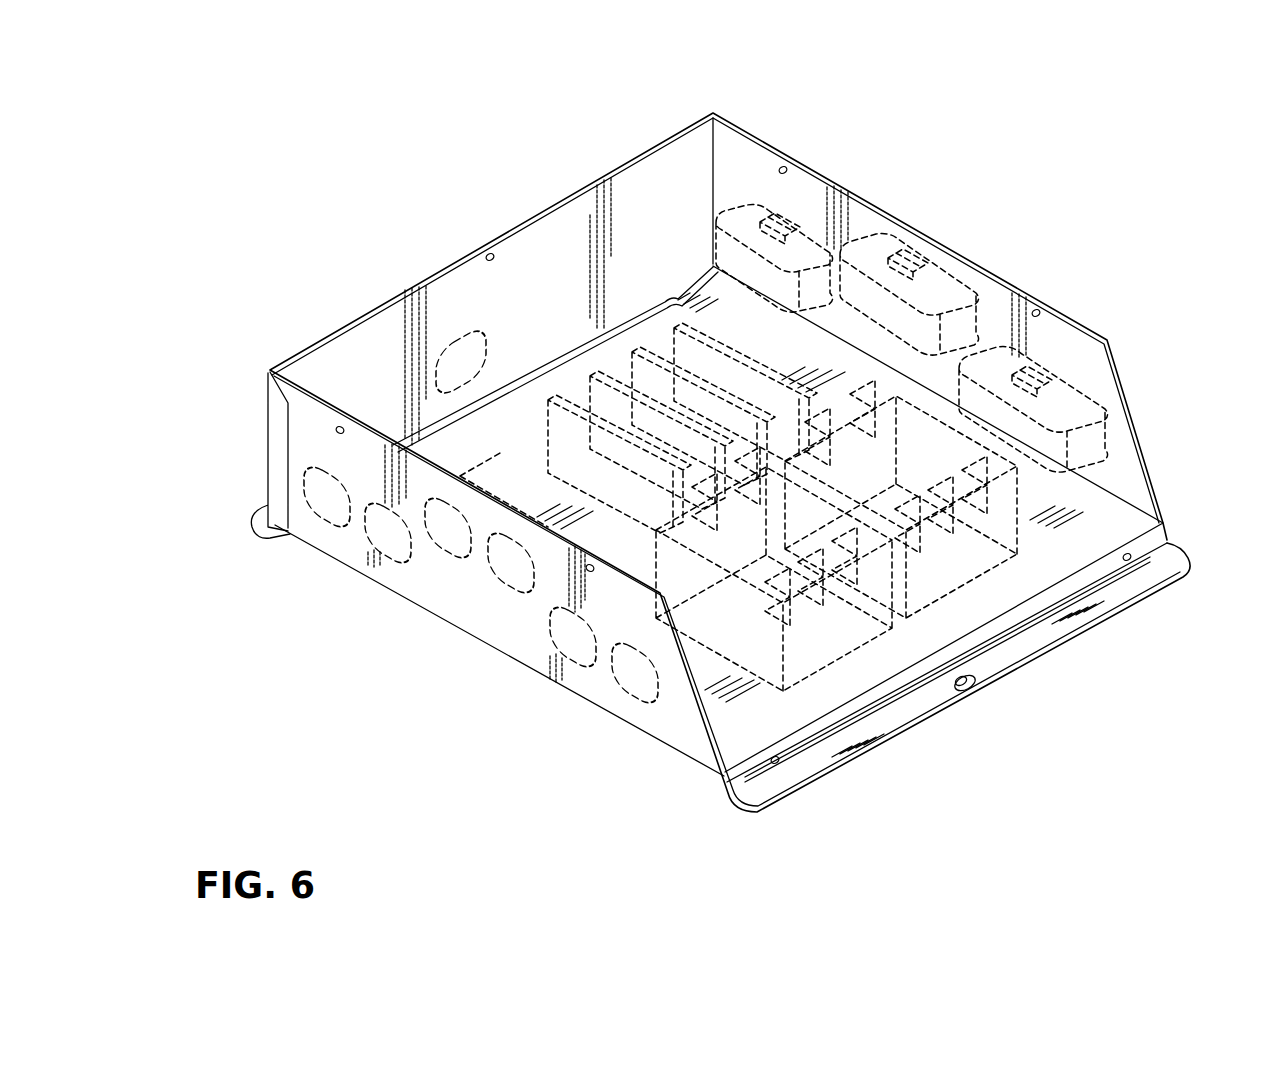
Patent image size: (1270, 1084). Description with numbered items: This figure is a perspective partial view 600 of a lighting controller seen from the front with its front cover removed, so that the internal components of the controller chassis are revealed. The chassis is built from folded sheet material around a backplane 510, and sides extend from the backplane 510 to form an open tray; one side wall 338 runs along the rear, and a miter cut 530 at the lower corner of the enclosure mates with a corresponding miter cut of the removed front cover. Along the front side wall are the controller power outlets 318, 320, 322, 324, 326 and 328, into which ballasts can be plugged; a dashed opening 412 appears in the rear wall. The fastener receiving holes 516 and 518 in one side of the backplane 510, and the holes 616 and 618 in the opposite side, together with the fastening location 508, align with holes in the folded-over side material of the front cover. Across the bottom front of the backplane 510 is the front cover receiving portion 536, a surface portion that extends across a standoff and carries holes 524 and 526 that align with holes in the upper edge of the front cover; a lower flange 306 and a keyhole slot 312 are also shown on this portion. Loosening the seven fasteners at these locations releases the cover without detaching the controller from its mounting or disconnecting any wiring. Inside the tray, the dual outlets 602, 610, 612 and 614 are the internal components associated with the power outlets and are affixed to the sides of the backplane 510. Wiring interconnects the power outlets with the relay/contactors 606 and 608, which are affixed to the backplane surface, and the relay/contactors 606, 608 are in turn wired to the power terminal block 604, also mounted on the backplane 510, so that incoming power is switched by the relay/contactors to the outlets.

The perspective partial view 600 is at (1002, 174).
The rear side wall 338 is at (523, 196).
The fastening location 508 is at (486, 256).
The side wall opening 412 is at (452, 362).
The miter cut 530 is at (268, 392).
The hole 516 is at (337, 431).
The power outlet 328 is at (327, 532).
The power outlet 326 is at (372, 568).
The power outlet 324 is at (445, 560).
The power outlet 322 is at (505, 595).
The power outlet 320 is at (577, 672).
The power outlet 318 is at (632, 708).
The hole 518 is at (594, 572).
The backplane 510 is at (728, 732).
The bottom flange 306 is at (1025, 648).
The front cover receiving portion 536 is at (876, 700).
The keyhole slot 312 is at (972, 690).
The hole 524 is at (1132, 561).
The hole 526 is at (780, 765).
The hole 616 is at (790, 170).
The hole 618 is at (1042, 313).
The dual outlet 602 is at (492, 487).
The power terminal block 604 is at (578, 487).
The relay/contactor 606 is at (695, 629).
The relay/contactor 608 is at (873, 472).
The dual outlet 610 is at (990, 430).
The dual outlet 612 is at (863, 322).
The dual outlet 614 is at (741, 292).